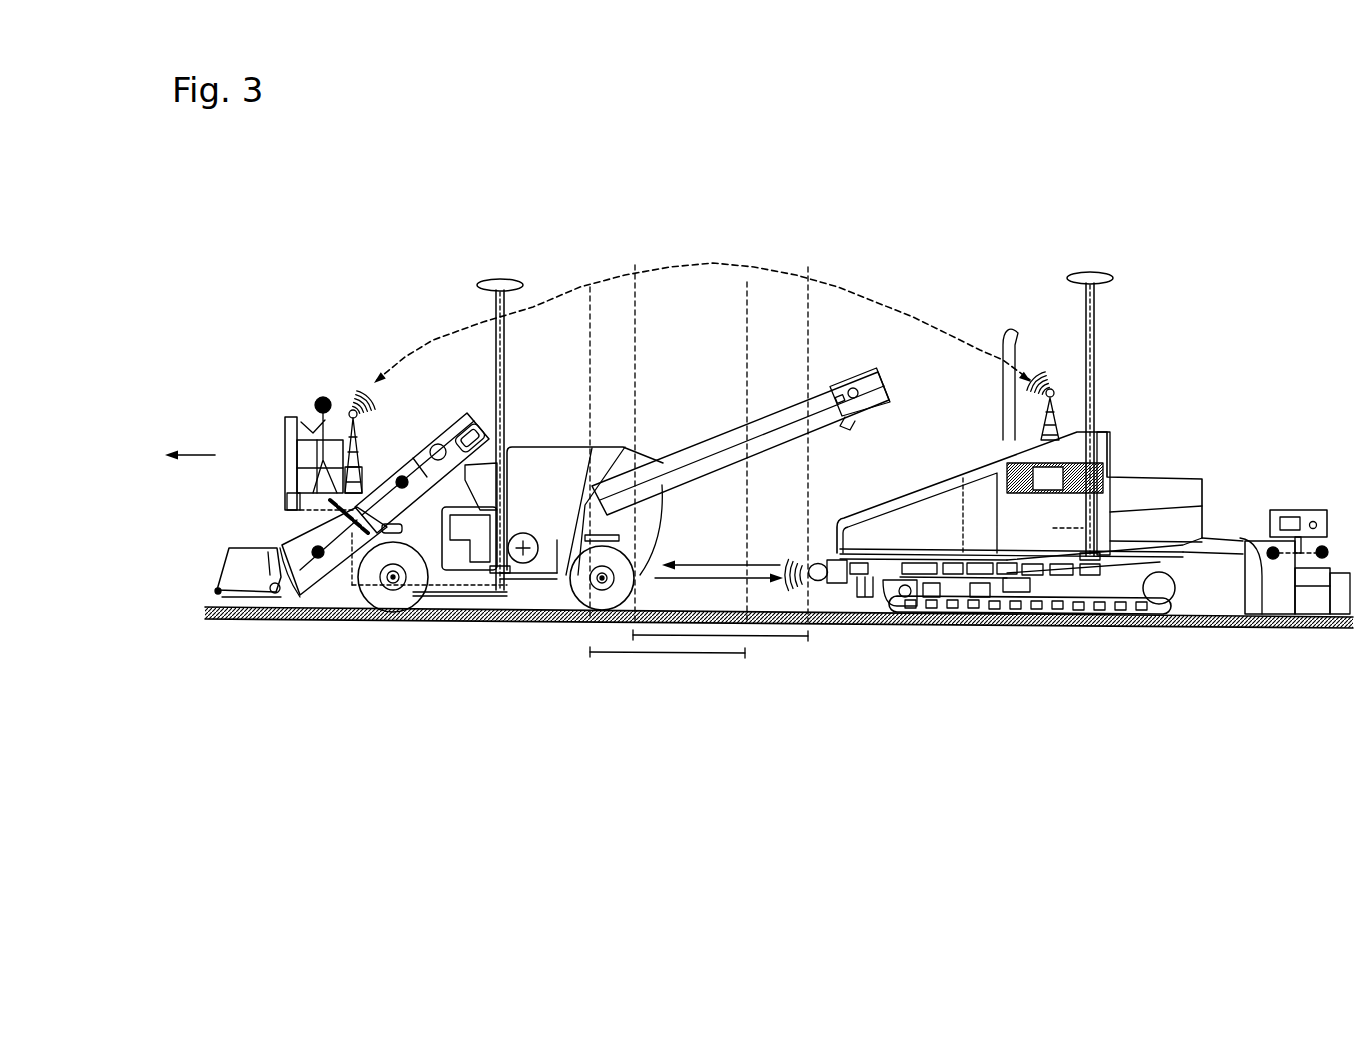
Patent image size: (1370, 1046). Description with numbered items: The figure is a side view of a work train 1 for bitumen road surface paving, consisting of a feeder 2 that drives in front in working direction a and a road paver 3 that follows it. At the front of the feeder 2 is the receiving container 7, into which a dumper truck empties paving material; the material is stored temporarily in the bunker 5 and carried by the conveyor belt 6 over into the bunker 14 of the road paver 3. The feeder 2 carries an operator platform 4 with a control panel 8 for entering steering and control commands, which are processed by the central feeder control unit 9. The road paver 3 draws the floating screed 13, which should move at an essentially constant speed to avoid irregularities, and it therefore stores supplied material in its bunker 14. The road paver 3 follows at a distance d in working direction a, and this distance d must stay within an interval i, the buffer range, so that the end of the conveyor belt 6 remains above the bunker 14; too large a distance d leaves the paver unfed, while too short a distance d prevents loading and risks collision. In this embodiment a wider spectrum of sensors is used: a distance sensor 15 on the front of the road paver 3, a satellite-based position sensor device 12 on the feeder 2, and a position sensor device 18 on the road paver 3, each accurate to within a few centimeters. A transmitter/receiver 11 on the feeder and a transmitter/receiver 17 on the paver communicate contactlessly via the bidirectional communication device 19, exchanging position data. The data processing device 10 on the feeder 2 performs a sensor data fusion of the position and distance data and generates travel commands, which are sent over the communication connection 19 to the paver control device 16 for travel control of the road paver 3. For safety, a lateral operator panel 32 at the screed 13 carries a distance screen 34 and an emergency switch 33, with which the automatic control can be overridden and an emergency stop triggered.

The work train 1 is at (713, 244).
The feeder 2 is at (372, 308).
The road paver 3 is at (1145, 312).
The operator platform 4 is at (363, 587).
The bunker 5 is at (540, 583).
The conveyor belt 6 is at (608, 590).
The receiving container 7 is at (248, 575).
The control panel 8 is at (288, 415).
The central feeder control unit 9 is at (313, 567).
The data processing device 10 is at (393, 580).
The transmitter/receiver 11 is at (353, 405).
The position sensor device 12 is at (500, 278).
The screed 13 is at (1245, 581).
The bunker 14 is at (920, 533).
The distance sensor 15 is at (833, 583).
The paver control device 16 is at (1050, 482).
The transmitter/receiver 17 is at (1049, 388).
The position sensor device 18 is at (1091, 272).
The bidirectional communication device 19 is at (625, 273).
The lateral operator panel 32 is at (1322, 510).
The emergency switch 33 is at (1312, 529).
The distance screen 34 is at (1290, 510).
The working direction a is at (178, 455).
The interval i is at (657, 659).
The distance d is at (716, 646).